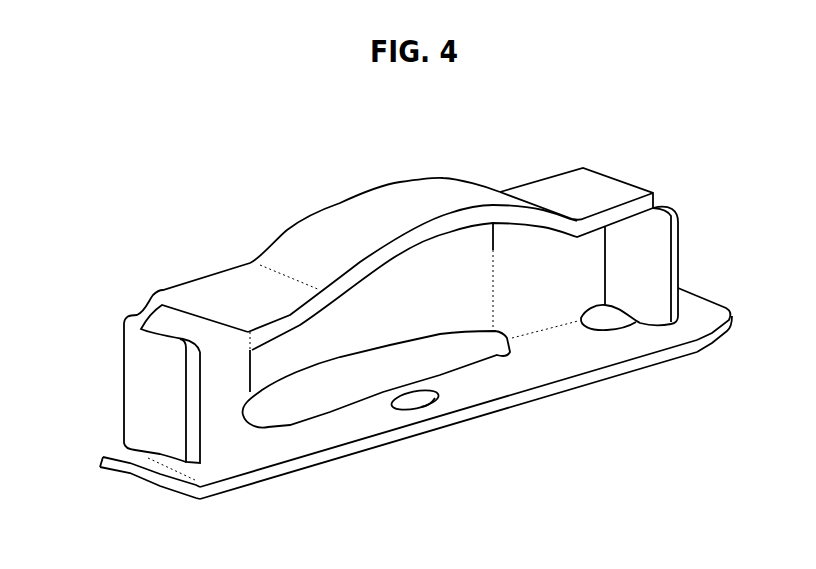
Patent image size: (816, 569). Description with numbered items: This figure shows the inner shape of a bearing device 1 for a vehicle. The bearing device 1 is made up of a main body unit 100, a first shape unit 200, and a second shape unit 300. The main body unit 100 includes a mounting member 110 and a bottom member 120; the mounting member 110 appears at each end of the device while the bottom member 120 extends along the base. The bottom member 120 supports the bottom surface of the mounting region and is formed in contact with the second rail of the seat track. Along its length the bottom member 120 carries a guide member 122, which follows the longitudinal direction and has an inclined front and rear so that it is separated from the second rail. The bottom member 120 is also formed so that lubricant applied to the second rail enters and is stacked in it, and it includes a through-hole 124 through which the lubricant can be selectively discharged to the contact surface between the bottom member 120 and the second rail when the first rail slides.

The bearing device 1 is at (712, 270).
The main body unit 100 is at (562, 283).
The mounting member 110 is at (147, 382).
The bottom member 120 is at (273, 447).
The guide member 122 is at (122, 471).
The through-hole 124 is at (432, 398).
The first shape unit 200 is at (310, 227).
The second shape unit 300 is at (422, 308).